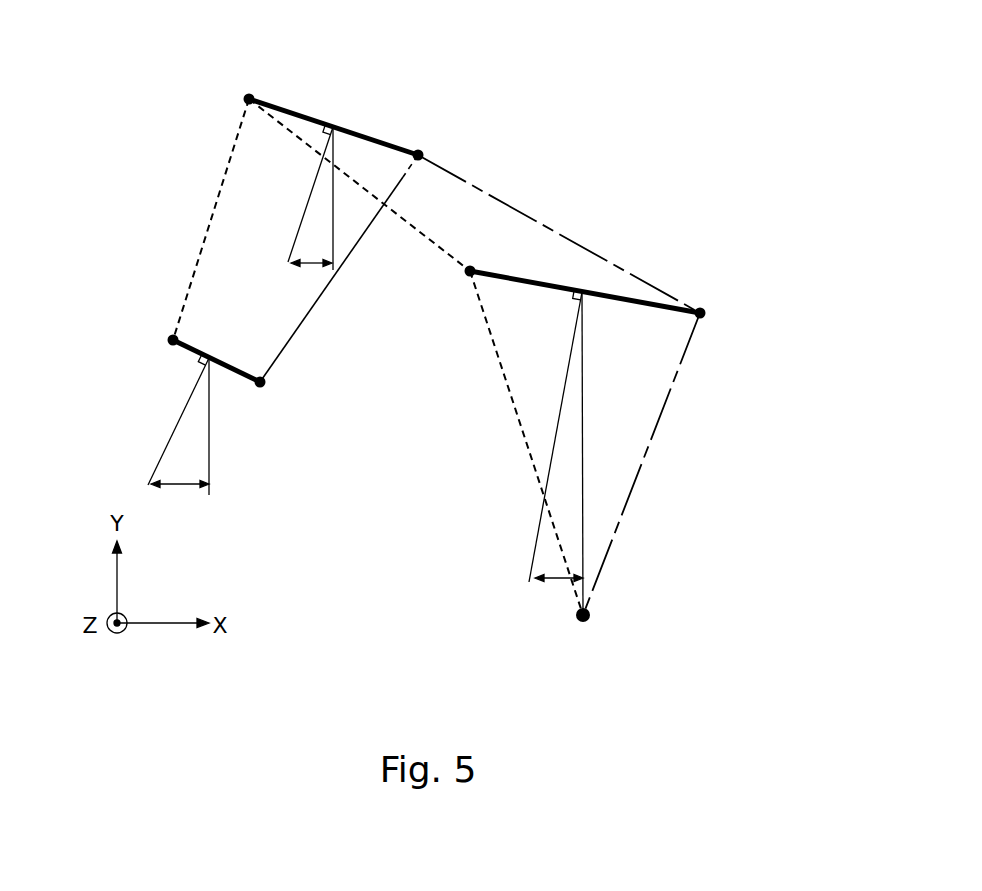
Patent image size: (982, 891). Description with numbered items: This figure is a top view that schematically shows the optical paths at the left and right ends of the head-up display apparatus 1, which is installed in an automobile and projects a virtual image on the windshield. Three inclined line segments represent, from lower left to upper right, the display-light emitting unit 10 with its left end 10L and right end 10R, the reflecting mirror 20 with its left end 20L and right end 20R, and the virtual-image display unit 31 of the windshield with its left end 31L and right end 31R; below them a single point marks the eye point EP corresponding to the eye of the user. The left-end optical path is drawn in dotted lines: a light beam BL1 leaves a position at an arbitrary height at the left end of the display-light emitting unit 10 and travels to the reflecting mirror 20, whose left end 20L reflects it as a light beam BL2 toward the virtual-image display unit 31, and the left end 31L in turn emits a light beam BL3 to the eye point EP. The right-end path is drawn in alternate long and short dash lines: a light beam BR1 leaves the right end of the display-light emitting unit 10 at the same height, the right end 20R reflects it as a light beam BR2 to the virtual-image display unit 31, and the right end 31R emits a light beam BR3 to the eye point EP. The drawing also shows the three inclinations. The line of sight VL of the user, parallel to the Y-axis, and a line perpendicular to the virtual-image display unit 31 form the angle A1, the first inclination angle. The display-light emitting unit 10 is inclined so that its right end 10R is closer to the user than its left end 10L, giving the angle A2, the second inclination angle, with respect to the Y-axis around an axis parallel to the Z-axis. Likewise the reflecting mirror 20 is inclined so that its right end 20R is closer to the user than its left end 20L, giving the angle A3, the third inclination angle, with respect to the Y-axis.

The head-up display apparatus 1 is at (130, 105).
The display-light emitting unit 10 is at (245, 386).
The left end of display-light emitting unit 10L is at (167, 345).
The right end of display-light emitting unit 10R is at (263, 386).
The reflecting mirror 20 is at (353, 126).
The left end of reflecting mirror 20L is at (251, 97).
The right end of reflecting mirror 20R is at (421, 153).
The virtual-image display unit 31 is at (626, 294).
The left end of virtual-image display unit 31L is at (468, 276).
The right end of virtual-image display unit 31R is at (703, 309).
The light beam BL1 is at (207, 228).
The light beam BL2 is at (418, 235).
The light beam BL3 is at (503, 377).
The light beam BR1 is at (305, 324).
The light beam BR2 is at (541, 214).
The light beam BR3 is at (636, 480).
The line of sight VL is at (585, 458).
The eye point EP is at (589, 604).
The angle A1 is at (543, 436).
The angle A2 is at (178, 425).
The angle A3 is at (310, 198).